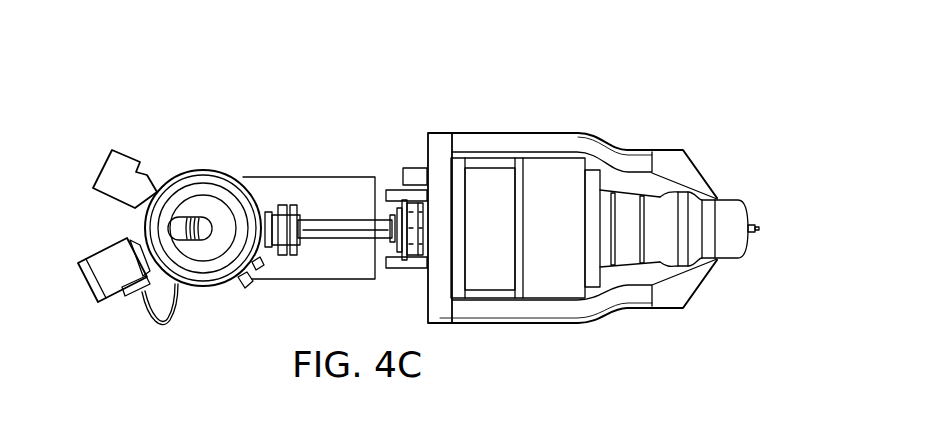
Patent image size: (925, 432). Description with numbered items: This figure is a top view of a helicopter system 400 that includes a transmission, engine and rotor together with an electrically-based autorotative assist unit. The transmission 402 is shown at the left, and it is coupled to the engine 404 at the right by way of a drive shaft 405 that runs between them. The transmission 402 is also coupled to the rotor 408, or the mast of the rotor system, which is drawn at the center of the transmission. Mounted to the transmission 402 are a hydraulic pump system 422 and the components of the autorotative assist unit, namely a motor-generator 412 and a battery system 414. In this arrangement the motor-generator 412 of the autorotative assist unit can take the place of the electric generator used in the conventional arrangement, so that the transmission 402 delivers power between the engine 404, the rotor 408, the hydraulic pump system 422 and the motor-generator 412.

The system 400 is at (520, 59).
The transmission 402 is at (150, 139).
The engine 404 is at (628, 327).
The drive shaft 405 is at (344, 219).
The rotor 408 is at (202, 216).
The motor-generator 412 is at (80, 290).
The battery system 414 is at (308, 281).
The hydraulic pump system 422 is at (101, 165).